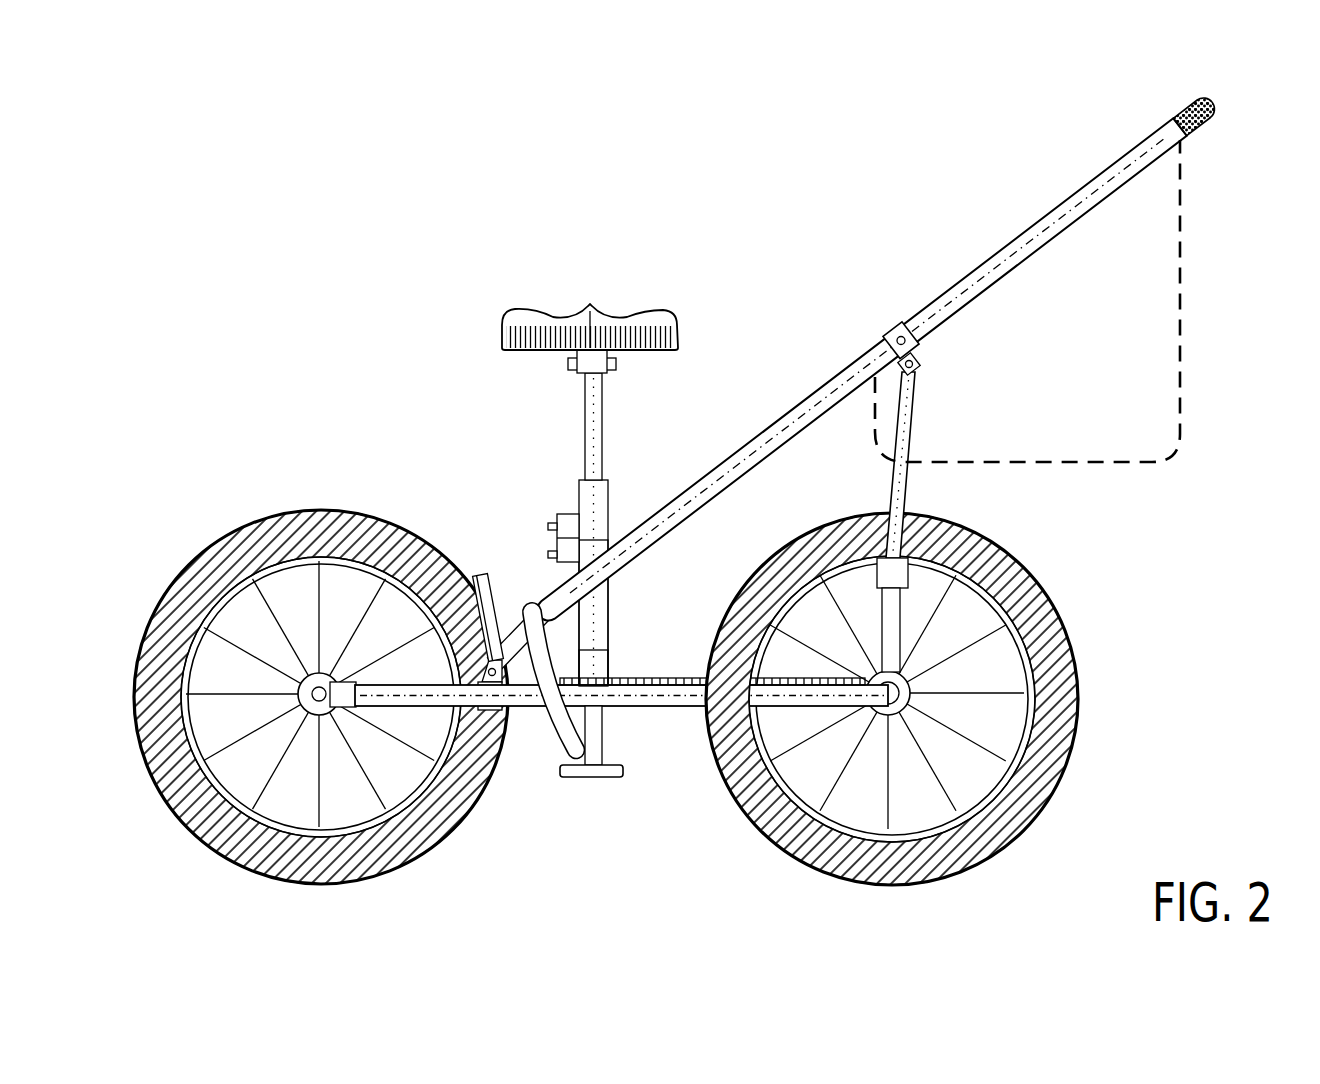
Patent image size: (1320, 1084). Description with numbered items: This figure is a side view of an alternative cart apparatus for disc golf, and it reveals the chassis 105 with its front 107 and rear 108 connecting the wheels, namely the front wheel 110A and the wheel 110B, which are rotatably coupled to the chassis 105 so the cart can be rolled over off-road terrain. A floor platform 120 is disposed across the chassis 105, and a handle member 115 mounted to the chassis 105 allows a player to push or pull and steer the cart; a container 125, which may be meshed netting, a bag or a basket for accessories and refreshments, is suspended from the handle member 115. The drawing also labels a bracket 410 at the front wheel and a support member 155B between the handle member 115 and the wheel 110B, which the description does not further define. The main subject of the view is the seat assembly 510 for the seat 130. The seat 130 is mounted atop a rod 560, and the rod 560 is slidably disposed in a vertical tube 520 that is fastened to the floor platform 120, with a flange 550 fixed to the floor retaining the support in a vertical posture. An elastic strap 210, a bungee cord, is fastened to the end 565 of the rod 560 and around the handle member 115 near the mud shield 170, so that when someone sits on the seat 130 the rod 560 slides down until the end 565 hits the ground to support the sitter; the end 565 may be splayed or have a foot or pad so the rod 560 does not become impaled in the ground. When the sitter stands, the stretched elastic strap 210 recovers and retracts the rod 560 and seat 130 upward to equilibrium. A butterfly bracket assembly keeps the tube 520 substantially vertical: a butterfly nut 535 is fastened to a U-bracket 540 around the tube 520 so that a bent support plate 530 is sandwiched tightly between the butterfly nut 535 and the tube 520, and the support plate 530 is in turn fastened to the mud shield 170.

The chassis 105 is at (642, 704).
The front 107 is at (424, 713).
The rear 108 is at (782, 713).
The front wheel 110A is at (197, 563).
The wheel 110B is at (1077, 700).
The handle member 115 is at (1077, 195).
The floor platform 120 is at (690, 678).
The container 125 is at (1220, 352).
The seat 130 is at (617, 310).
The support strut 155B is at (908, 498).
The mud shield 170 is at (472, 574).
The elastic strap 210 is at (560, 720).
The axle bracket 410 is at (478, 669).
The seat assembly 510 is at (400, 302).
The vertical tube 520 is at (580, 492).
The bent support plate 530 is at (552, 583).
The butterfly nut 535 is at (558, 520).
The U-bracket 540 is at (608, 540).
The flange 550 is at (617, 680).
The rod 560 is at (600, 413).
The end 565 is at (605, 776).